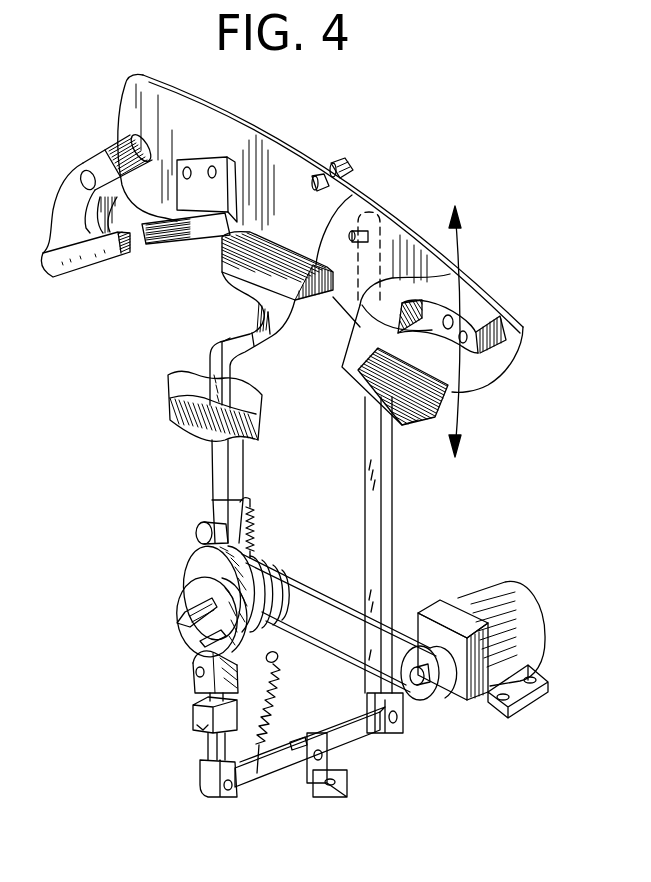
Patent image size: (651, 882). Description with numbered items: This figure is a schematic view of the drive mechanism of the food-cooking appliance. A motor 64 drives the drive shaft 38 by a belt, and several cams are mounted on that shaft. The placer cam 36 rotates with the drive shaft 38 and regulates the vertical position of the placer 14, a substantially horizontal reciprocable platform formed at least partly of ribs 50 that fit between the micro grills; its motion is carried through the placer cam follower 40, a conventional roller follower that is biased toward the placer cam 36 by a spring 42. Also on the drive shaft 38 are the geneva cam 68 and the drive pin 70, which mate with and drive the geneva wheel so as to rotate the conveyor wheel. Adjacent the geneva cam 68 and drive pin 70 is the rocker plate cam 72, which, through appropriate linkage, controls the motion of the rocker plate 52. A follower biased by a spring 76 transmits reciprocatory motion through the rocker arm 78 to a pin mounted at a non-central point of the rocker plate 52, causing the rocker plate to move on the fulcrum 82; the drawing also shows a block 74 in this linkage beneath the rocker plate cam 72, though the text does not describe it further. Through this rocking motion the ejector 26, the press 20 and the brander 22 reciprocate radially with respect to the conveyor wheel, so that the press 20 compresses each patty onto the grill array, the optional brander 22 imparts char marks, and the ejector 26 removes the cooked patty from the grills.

The placer 14 is at (352, 195).
The press 20 is at (204, 183).
The brander 22 is at (68, 208).
The ejector means 26 is at (461, 273).
The placer cam 36 is at (190, 567).
The drive shaft 38 is at (273, 560).
The placer cam follower 40 is at (203, 533).
The spring 42 is at (247, 517).
The ribs 50 is at (247, 258).
The rocker plate 52 is at (228, 132).
The motor 64 is at (510, 593).
The geneva cam 68 is at (180, 617).
The drive pin 70 is at (193, 642).
The rocker plate cam 72 is at (180, 595).
The block 74 is at (193, 662).
The spring 76 is at (272, 706).
The rocker arm 78 is at (268, 767).
The fulcrum 82 is at (340, 160).